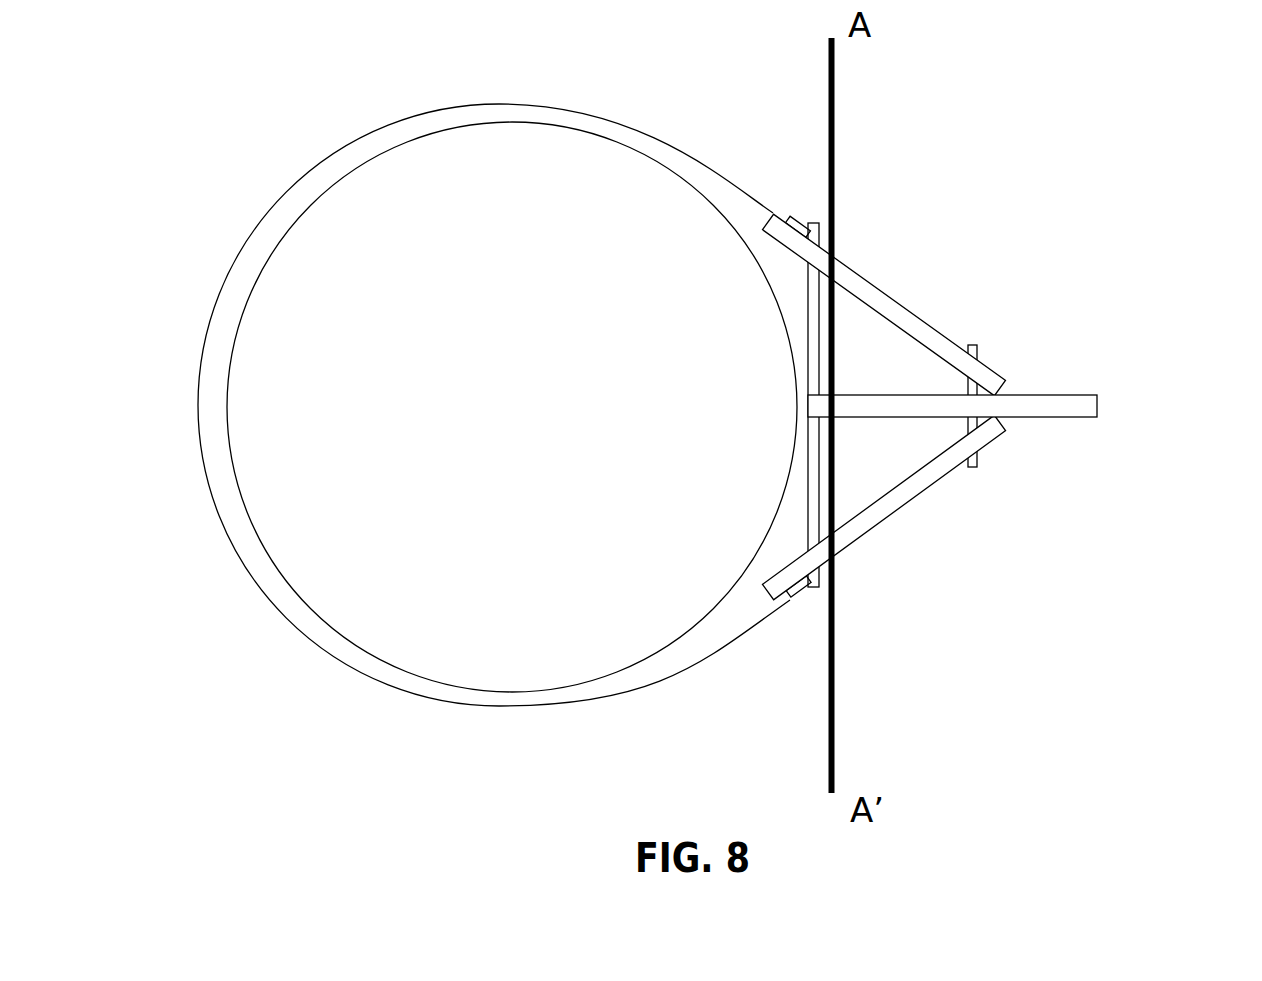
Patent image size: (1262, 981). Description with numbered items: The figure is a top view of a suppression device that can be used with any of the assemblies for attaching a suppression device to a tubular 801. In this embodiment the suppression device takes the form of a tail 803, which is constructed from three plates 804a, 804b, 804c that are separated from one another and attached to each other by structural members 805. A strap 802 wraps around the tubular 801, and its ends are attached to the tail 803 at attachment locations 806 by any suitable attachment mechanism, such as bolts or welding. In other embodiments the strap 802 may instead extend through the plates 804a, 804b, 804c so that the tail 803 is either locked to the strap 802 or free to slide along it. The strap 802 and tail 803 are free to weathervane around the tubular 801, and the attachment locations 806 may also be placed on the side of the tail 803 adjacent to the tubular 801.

The tubular 801 is at (512, 387).
The strap 802 is at (469, 405).
The tail 803 is at (1077, 343).
The plate 804a is at (884, 275).
The plate 804b is at (1023, 409).
The plate 804c is at (895, 510).
The structural member 805 is at (889, 405).
The attachment location 806 is at (815, 371).